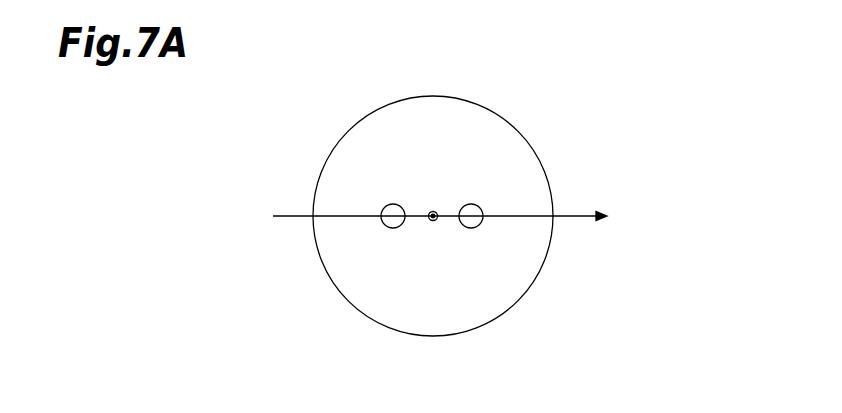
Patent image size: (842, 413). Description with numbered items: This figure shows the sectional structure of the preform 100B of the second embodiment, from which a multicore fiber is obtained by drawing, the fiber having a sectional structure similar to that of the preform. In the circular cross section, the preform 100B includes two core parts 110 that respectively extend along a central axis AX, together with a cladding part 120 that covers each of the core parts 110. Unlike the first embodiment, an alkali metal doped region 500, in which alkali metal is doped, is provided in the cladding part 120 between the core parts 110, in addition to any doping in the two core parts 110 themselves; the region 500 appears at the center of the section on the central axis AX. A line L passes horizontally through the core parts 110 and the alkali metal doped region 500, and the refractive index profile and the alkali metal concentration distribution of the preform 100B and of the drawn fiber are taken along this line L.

The preform 100B is at (535, 150).
The cladding part 120 is at (393, 125).
The core parts 110 is at (470, 228).
The alkali metal doped region 500 is at (427, 212).
The central axis AX is at (433, 211).
The line L is at (450, 219).